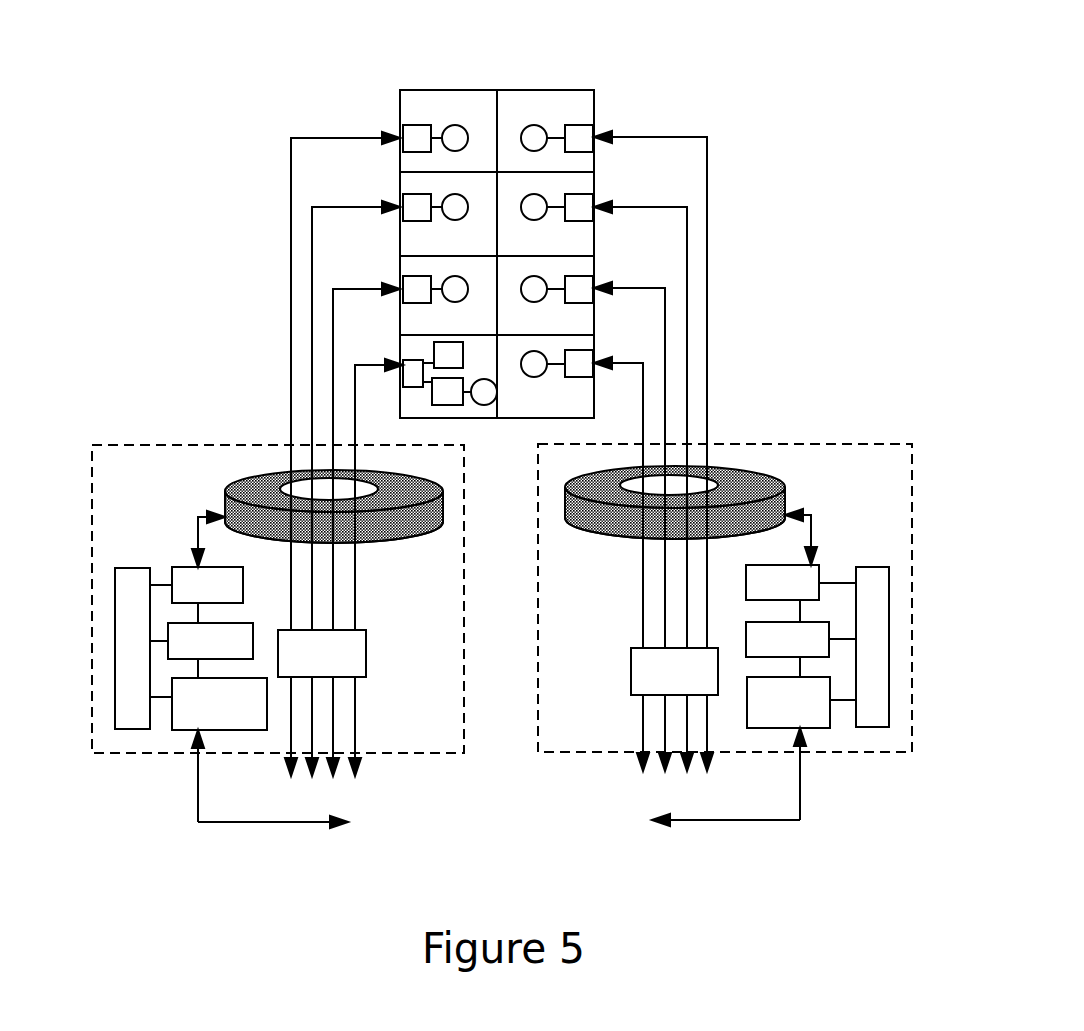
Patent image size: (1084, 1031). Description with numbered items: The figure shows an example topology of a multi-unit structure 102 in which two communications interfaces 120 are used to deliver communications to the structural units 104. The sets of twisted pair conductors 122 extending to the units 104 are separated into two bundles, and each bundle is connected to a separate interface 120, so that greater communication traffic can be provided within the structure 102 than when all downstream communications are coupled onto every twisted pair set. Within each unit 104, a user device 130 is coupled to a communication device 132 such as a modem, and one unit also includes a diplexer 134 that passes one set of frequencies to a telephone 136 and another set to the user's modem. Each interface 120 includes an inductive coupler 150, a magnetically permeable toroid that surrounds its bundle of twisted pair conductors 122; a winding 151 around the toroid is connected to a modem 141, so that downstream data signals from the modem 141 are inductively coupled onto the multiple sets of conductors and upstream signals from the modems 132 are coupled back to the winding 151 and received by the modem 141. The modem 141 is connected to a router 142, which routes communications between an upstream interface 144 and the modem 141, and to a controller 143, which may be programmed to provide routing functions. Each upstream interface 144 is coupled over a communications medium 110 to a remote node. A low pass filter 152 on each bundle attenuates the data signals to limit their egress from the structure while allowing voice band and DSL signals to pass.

The multi-unit structure 102 is at (352, 56).
The structural unit 104 is at (560, 88).
The communications medium 110 is at (230, 822).
The communications interface 120 is at (502, 581).
The twisted pair conductors 122 is at (323, 137).
The user device 130 is at (452, 125).
The communication device 132 is at (423, 221).
The diplexer 134 is at (408, 360).
The telephone 136 is at (440, 343).
The modem 141 is at (183, 565).
The router 142 is at (197, 623).
The controller 143 is at (120, 730).
The upstream interface 144 is at (205, 732).
The inductive coupler 150 is at (225, 497).
The winding 151 is at (388, 545).
The low pass filter 152 is at (498, 659).